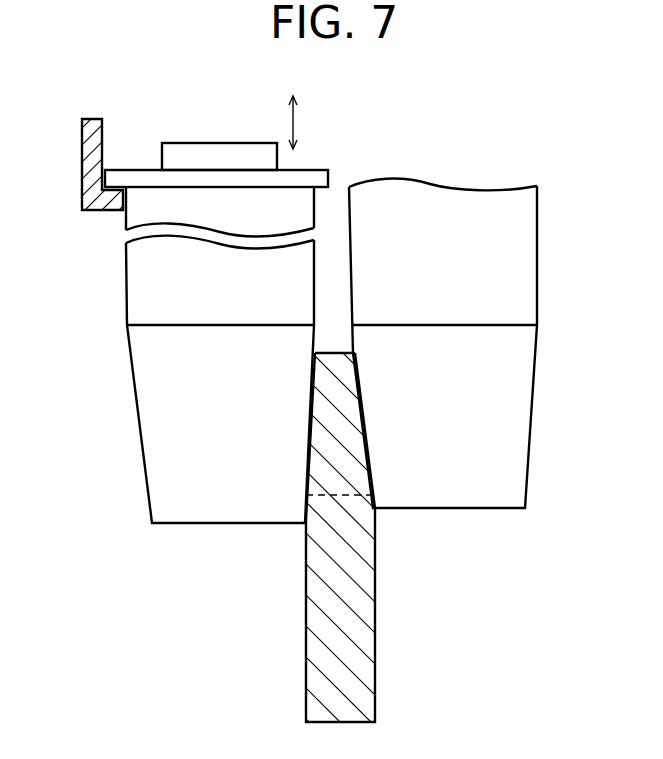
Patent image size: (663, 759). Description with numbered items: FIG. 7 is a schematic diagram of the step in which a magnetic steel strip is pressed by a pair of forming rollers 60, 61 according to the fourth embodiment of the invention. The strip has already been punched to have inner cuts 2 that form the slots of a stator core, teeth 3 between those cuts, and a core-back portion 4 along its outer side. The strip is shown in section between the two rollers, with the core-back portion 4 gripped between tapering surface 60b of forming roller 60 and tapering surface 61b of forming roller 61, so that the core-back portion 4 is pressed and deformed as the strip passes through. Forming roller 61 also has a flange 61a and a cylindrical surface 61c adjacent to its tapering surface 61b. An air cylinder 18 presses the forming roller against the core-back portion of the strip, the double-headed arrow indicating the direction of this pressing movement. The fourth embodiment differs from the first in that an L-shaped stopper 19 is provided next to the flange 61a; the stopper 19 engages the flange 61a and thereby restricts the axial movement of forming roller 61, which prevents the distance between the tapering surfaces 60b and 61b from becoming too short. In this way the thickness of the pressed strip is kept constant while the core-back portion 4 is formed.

The inner cuts 2 is at (335, 529).
The teeth 3 is at (327, 693).
The core-back portion 4 is at (327, 487).
The air cylinder 18 is at (226, 151).
The L-shaped stopper 19 is at (100, 190).
The forming roller 60 is at (488, 343).
The tapering surface 60b is at (523, 428).
The forming roller 61 is at (206, 307).
The flange 61a is at (317, 176).
The tapering surface 61b is at (157, 433).
The cylindrical surface 61c is at (277, 285).